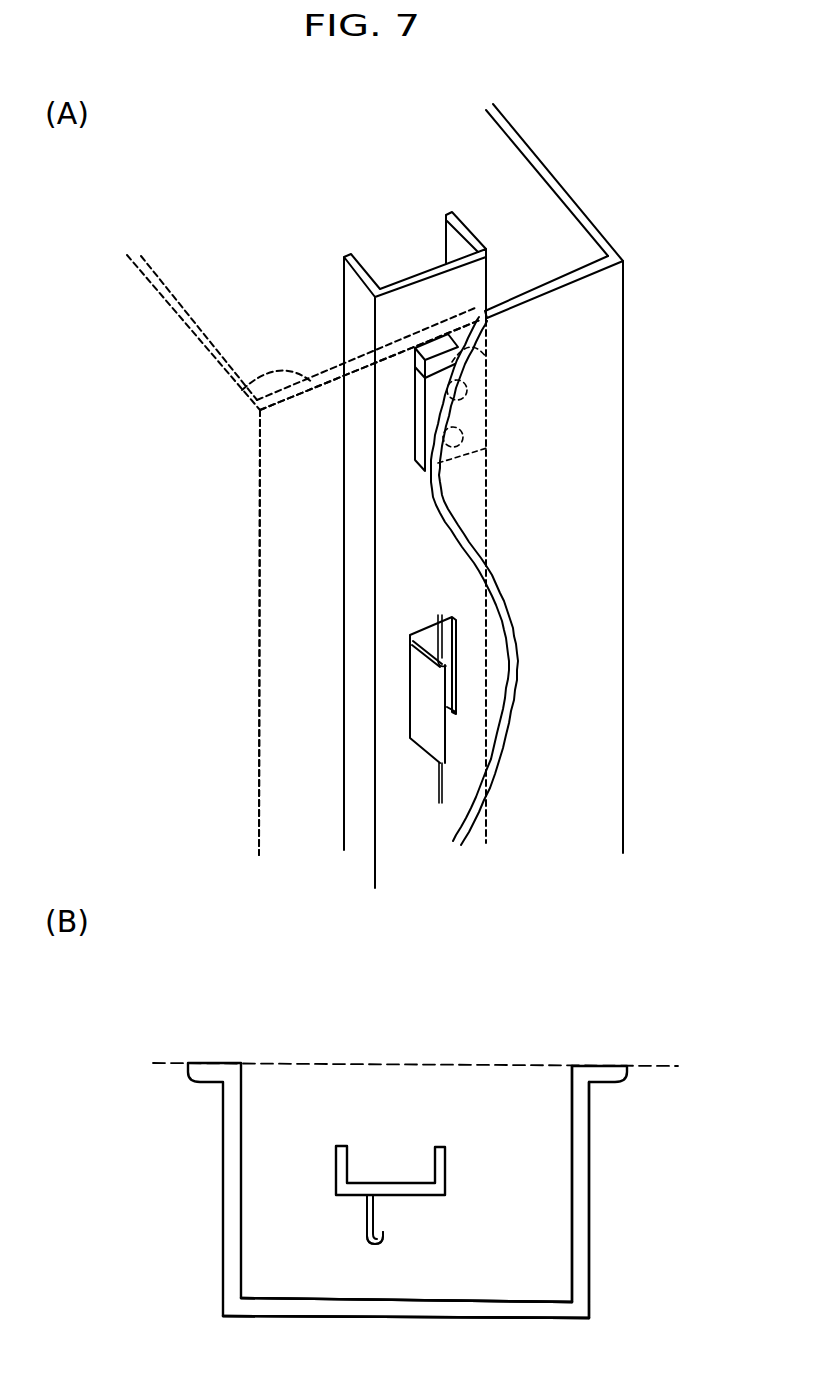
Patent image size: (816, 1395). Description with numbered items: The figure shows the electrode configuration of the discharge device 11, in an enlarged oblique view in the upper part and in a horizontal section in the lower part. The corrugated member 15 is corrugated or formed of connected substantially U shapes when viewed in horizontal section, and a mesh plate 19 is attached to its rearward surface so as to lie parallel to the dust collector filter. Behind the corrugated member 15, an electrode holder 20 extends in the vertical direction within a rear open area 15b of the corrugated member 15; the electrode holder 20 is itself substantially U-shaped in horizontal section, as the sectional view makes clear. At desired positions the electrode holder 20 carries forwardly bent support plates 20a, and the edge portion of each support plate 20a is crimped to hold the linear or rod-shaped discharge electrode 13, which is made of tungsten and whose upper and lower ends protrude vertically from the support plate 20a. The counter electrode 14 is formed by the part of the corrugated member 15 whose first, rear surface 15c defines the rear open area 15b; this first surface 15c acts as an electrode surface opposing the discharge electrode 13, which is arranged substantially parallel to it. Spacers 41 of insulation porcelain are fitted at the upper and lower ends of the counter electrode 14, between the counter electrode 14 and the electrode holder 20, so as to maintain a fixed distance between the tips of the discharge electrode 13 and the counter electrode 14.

The discharge device 11 is at (596, 121).
The discharge electrode 13 is at (440, 615).
The counter electrode 14 is at (243, 390).
The corrugated member 15 is at (600, 362).
The rear open area 15b is at (203, 277).
The first surface 15c is at (406, 819).
The mesh plate 19 is at (320, 1062).
The electrode holder 20 is at (355, 300).
The support plate 20a is at (420, 717).
The spacer 41 is at (418, 412).